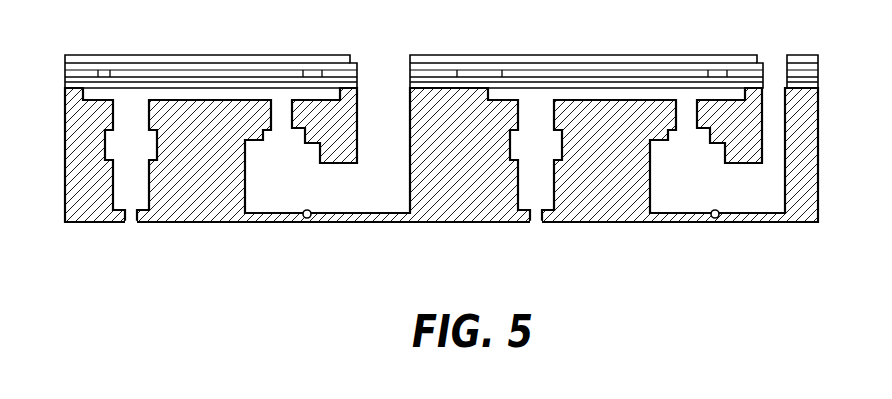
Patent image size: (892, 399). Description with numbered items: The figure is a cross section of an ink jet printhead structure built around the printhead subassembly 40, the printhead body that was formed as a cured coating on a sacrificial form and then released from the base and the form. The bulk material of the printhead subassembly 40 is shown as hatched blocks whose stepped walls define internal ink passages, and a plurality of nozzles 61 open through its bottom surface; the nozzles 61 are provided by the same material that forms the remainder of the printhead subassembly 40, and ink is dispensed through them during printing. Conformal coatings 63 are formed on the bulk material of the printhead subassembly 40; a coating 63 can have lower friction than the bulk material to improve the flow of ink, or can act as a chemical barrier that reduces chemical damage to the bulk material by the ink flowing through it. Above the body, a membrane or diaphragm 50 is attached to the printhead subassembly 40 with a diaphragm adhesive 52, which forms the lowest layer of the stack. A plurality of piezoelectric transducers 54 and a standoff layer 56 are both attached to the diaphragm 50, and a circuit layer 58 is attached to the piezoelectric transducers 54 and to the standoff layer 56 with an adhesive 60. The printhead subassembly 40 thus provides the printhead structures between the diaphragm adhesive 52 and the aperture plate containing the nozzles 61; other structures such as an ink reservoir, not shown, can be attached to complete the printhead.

The printhead subassembly 40 is at (65, 151).
The diaphragm 50 is at (63, 79).
The diaphragm adhesive 52 is at (63, 85).
The piezoelectric transducers 54 is at (208, 70).
The standoff layer 56 is at (82, 71).
The circuit layer 58 is at (282, 60).
The adhesive 60 is at (313, 63).
The nozzles 61 is at (131, 233).
The conformal coating 63 is at (306, 219).